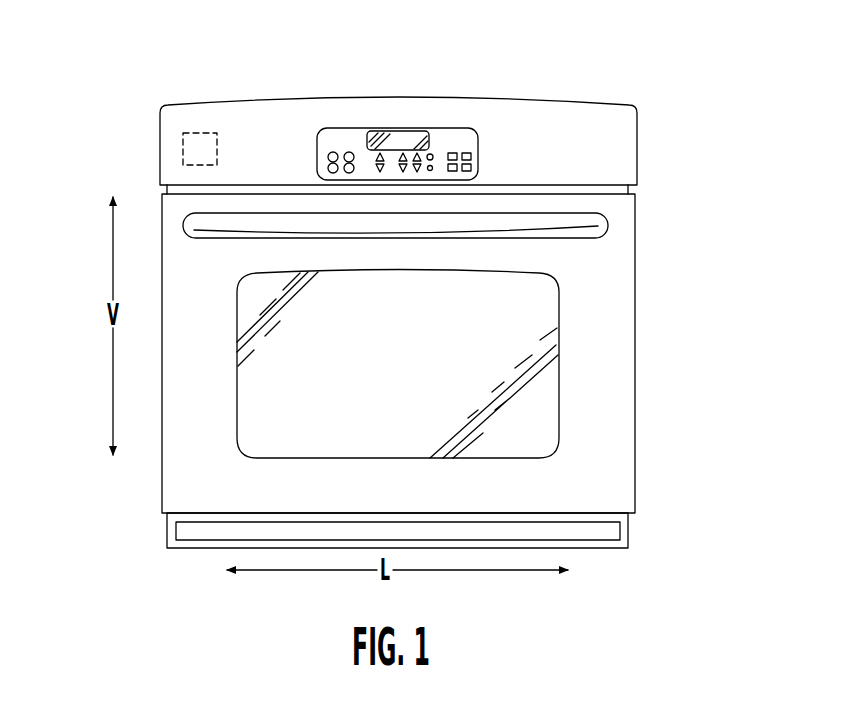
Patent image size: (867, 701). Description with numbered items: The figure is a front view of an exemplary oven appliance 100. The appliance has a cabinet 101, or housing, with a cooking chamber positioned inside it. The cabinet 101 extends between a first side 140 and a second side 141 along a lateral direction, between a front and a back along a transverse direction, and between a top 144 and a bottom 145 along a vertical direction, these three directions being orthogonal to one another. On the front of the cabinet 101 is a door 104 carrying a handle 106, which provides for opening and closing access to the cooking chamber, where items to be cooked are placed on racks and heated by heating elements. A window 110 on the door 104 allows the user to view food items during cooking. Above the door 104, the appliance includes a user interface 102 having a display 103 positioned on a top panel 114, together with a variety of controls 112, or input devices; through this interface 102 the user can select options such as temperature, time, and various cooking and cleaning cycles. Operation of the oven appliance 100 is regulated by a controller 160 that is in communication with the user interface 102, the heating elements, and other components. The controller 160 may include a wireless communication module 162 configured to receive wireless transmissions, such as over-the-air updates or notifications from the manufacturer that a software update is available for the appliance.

The oven appliance 100 is at (695, 106).
The cabinet 101 is at (630, 530).
The user interface 102 is at (448, 135).
The display 103 is at (397, 138).
The door 104 is at (610, 358).
The handle 106 is at (600, 222).
The window 110 is at (415, 373).
The controls 112 is at (333, 130).
The top panel 114 is at (627, 106).
The first side 140 is at (168, 557).
The second side 141 is at (627, 556).
The top 144 is at (134, 80).
The bottom 145 is at (148, 544).
The controller 160 is at (183, 148).
The wireless communication module 162 is at (193, 122).